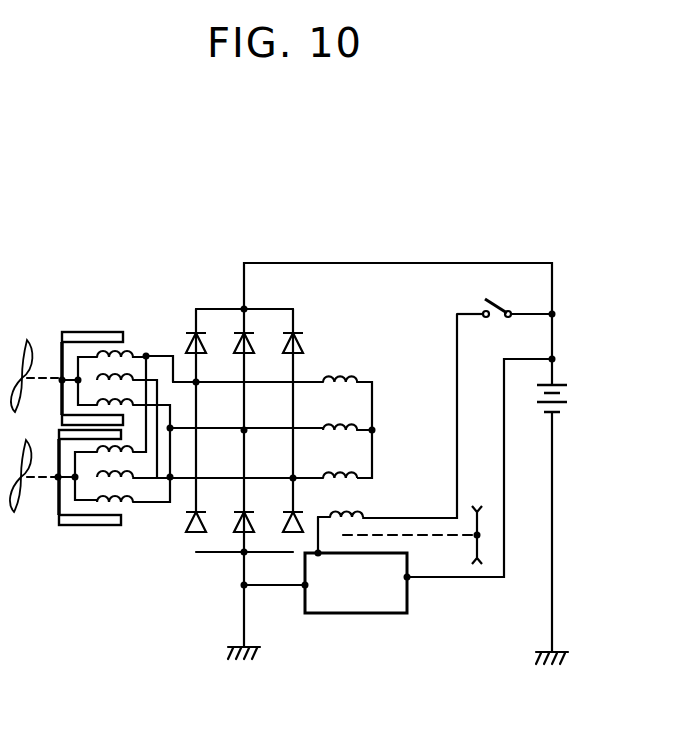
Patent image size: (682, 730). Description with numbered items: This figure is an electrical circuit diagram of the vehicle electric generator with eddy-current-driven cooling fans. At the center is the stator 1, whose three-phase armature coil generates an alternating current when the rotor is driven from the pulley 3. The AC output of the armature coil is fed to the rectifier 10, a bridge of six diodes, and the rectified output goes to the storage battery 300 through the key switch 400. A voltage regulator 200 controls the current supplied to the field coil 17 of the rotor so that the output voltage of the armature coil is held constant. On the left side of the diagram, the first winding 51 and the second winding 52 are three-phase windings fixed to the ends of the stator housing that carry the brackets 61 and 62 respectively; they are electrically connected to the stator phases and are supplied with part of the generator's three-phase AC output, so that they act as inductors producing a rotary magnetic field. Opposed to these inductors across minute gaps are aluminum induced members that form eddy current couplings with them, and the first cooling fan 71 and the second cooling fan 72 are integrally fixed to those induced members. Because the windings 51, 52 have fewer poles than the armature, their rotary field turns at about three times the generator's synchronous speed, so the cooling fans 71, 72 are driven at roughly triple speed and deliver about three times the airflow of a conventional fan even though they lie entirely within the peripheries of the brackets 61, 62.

The stator 1 is at (343, 378).
The pulley 3 is at (477, 566).
The rectifier 10 is at (215, 325).
The field coil 17 is at (366, 506).
The first winding 51 is at (132, 362).
The second winding 52 is at (130, 486).
The bracket 61 is at (88, 332).
The bracket 62 is at (80, 527).
The first cooling fan 71 is at (27, 340).
The second cooling fan 72 is at (10, 514).
The voltage regulator 200 is at (347, 615).
The storage battery 300 is at (567, 396).
The key switch 400 is at (497, 303).